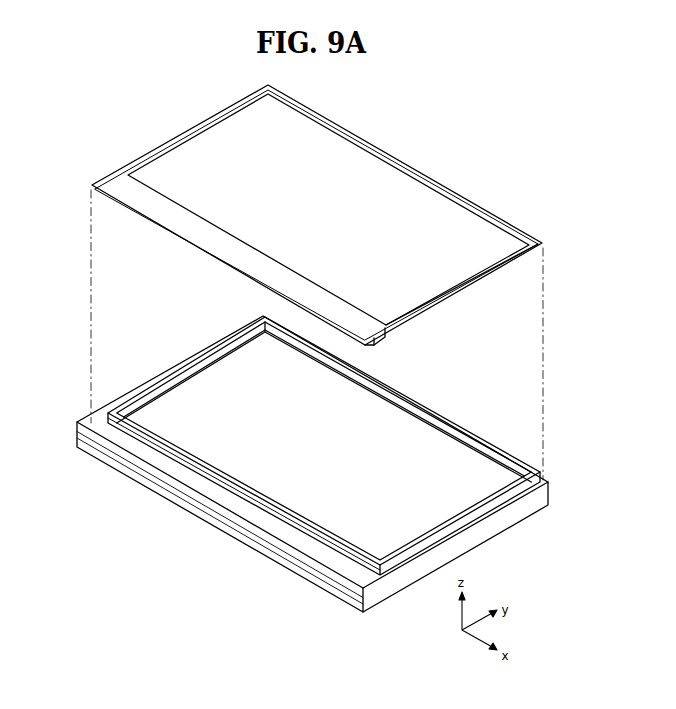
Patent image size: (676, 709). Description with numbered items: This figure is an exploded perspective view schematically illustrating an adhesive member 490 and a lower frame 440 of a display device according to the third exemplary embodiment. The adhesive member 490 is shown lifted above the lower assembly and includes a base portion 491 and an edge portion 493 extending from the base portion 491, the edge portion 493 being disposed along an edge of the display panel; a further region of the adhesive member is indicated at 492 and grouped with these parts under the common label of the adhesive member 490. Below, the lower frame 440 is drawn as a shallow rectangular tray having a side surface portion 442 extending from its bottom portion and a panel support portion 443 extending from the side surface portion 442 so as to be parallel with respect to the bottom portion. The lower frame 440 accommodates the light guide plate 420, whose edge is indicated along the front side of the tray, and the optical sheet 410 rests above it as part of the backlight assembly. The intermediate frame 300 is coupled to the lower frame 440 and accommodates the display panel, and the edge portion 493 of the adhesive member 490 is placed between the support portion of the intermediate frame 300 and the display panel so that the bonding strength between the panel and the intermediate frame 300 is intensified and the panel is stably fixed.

The intermediate frame 300 is at (131, 404).
The optical sheet 410 is at (198, 385).
The light guide plate 420 is at (214, 488).
The lower frame 440 is at (312, 499).
The side surface portion 442 is at (371, 597).
The panel support portion 443 is at (346, 574).
The adhesive member 490 is at (317, 215).
The base portion 491 is at (368, 342).
The edge portion of cover window 492 is at (383, 334).
The edge portion 493 is at (462, 284).